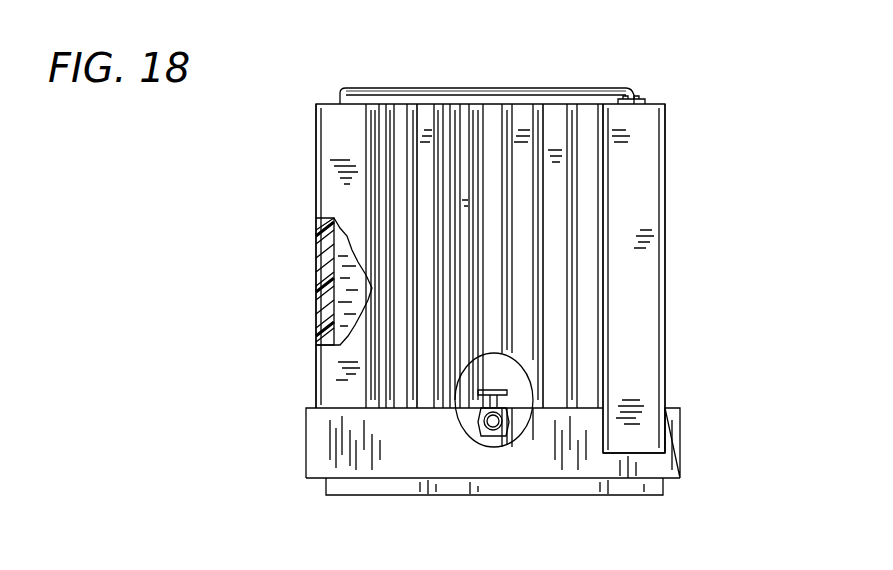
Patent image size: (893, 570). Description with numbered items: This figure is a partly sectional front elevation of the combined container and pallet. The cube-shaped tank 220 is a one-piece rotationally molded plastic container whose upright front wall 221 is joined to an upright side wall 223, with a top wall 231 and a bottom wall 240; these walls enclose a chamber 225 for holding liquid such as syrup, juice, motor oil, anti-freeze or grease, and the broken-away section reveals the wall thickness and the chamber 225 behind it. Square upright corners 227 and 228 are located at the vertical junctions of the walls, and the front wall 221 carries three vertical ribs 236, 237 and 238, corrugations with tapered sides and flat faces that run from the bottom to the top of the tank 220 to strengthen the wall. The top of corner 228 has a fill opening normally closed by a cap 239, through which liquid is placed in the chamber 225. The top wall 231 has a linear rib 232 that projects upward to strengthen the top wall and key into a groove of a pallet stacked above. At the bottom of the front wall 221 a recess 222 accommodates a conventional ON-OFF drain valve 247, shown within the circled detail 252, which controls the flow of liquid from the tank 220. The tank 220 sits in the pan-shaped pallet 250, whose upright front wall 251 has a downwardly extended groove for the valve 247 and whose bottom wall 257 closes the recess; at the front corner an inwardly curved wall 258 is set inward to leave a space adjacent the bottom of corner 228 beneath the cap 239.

The tank 220 is at (650, 72).
The front wall 221 is at (395, 282).
The recess 222 is at (467, 403).
The side wall 223 is at (330, 323).
The chamber 225 is at (318, 252).
The corner 227 is at (343, 134).
The corner 228 is at (640, 233).
The top wall 231 is at (333, 106).
The rib 232 is at (423, 98).
The vertical rib 236 is at (425, 398).
The vertical rib 237 is at (486, 115).
The vertical rib 238 is at (552, 113).
The cap 239 is at (637, 100).
The bottom wall 240 is at (640, 478).
The drain valve 247 is at (490, 437).
The pallet 250 is at (308, 437).
The front wall 251 is at (322, 463).
The opening 252 is at (513, 430).
The bottom wall 257 is at (583, 477).
The inwardly curved wall 258 is at (668, 463).